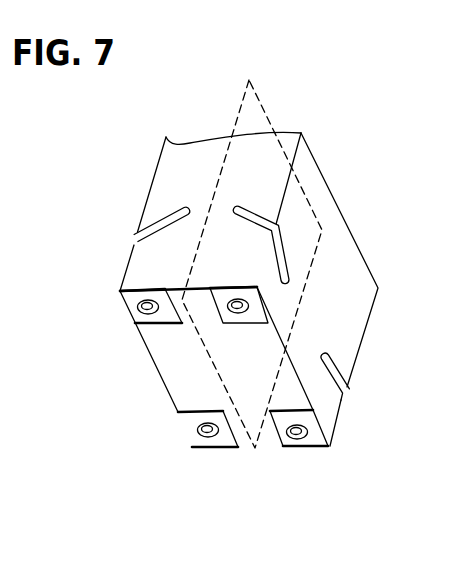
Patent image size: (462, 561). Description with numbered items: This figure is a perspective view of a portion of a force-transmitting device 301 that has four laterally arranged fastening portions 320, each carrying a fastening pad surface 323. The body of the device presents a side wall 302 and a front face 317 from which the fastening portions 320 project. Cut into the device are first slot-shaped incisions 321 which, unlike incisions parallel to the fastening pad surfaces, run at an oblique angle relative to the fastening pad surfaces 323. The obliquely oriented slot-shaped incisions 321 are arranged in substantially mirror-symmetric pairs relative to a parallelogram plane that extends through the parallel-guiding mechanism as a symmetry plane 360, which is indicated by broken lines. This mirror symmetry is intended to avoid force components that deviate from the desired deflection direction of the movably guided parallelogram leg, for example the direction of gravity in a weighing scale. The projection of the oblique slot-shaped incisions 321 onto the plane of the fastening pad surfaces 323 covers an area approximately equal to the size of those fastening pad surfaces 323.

The battery module / assembly 301 is at (314, 128).
The side wall 302 is at (361, 300).
The front face / wall 317 is at (185, 380).
The mounting pad / foot 320 is at (117, 298).
The first slot-shaped incisions 321 is at (150, 234).
The fastening pad surfaces 323 is at (143, 318).
The symmetry plane 360 is at (243, 123).